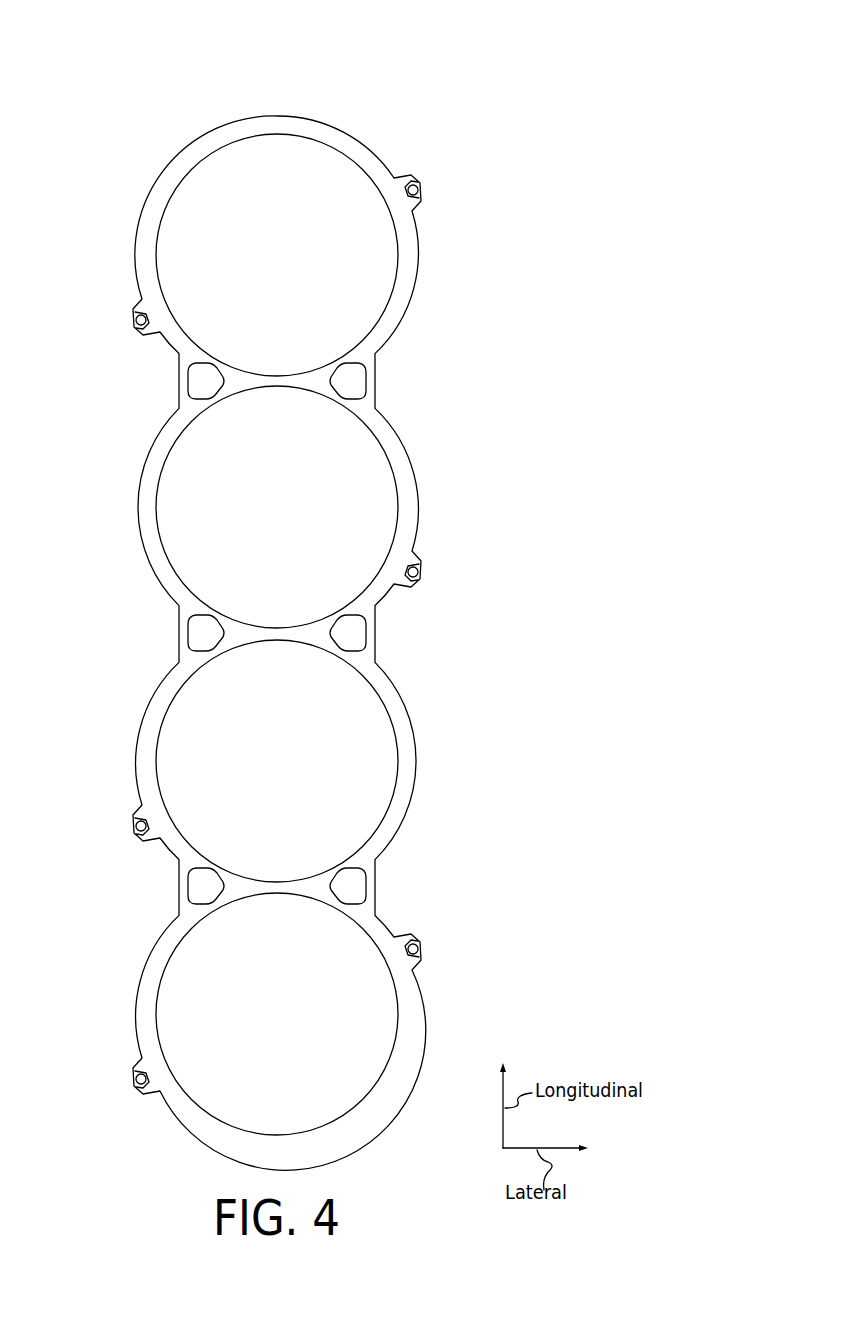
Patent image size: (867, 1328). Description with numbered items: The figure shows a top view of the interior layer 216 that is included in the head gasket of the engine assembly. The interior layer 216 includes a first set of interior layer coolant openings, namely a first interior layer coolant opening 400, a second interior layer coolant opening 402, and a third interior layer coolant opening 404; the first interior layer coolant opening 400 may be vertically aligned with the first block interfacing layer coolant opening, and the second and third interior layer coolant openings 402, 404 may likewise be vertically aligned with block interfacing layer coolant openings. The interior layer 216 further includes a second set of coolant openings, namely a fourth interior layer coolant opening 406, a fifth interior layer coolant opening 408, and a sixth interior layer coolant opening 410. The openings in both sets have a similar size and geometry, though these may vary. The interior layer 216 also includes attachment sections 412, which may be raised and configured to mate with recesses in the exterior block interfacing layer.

The interior layer 216 is at (430, 88).
The first interior layer coolant opening 400 is at (364, 887).
The second interior layer coolant opening 402 is at (364, 634).
The third interior layer coolant opening 404 is at (364, 381).
The fourth interior layer coolant opening 406 is at (190, 887).
The fifth interior layer coolant opening 408 is at (190, 634).
The sixth interior layer coolant opening 410 is at (190, 382).
The attachment sections 412 is at (136, 321).